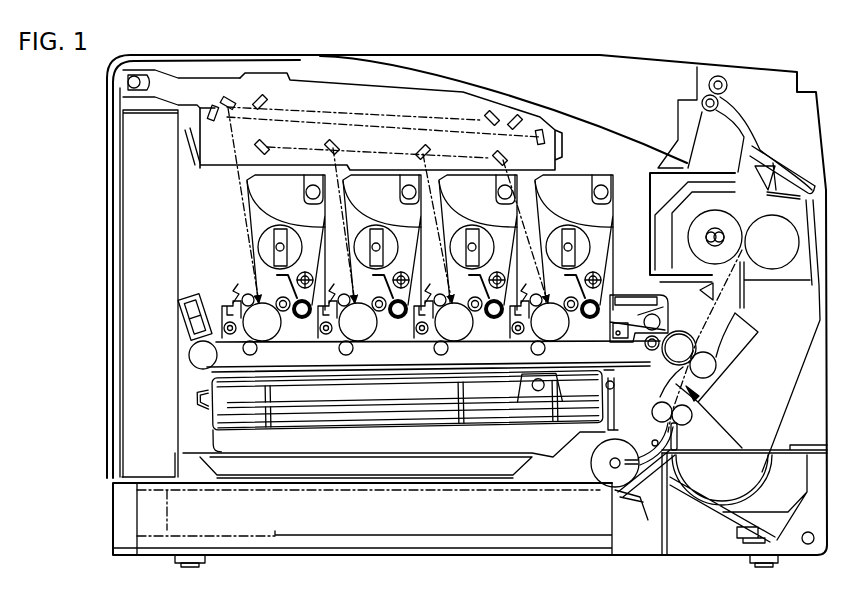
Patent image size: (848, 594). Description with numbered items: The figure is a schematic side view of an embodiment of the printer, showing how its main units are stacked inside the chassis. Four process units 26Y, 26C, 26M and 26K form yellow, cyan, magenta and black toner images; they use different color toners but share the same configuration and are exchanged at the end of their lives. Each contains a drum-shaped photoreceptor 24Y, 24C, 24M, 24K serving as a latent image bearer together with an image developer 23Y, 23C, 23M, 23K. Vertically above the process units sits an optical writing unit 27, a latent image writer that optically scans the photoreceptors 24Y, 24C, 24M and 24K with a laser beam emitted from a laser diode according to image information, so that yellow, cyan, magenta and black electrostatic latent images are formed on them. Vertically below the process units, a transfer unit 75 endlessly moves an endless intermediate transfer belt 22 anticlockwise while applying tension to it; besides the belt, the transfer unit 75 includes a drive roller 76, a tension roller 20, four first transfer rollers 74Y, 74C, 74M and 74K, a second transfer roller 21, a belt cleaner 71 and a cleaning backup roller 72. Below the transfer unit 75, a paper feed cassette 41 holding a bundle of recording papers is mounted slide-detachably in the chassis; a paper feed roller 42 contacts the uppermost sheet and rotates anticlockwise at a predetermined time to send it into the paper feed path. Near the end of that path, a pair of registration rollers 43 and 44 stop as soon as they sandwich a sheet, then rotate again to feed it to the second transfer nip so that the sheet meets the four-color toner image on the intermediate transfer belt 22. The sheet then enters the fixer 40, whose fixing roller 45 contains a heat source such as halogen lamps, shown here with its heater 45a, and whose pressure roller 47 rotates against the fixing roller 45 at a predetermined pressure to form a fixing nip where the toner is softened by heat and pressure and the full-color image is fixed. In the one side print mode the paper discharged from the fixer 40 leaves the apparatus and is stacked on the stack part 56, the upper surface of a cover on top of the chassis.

The tension roller 20 is at (680, 332).
The second transfer roller 21 is at (717, 369).
The intermediate transfer belt 22 is at (312, 343).
The image developer 23K is at (296, 201).
The image developer 23M is at (390, 201).
The image developer 23C is at (490, 201).
The image developer 23Y is at (585, 201).
The photoreceptor 24K is at (274, 329).
The photoreceptor 24M is at (371, 329).
The photoreceptor 24C is at (466, 329).
The photoreceptor 24Y is at (562, 329).
The process unit 26K is at (240, 253).
The process unit 26M is at (335, 253).
The process unit 26C is at (433, 255).
The process unit 26Y is at (532, 255).
The optical writing unit 27 is at (320, 78).
The fixer 40 is at (649, 197).
The paper feed cassette 41 is at (618, 543).
The paper feed roller 42 is at (591, 464).
The registration roller 43 is at (652, 415).
The registration roller 44 is at (690, 421).
The fixing roller 45 is at (710, 213).
The heater 45a is at (718, 228).
The pressure roller 47 is at (788, 258).
The stack part 56 is at (604, 116).
The belt cleaner 71 is at (631, 293).
The cleaning backup roller 72 is at (648, 351).
The first transfer roller 74K is at (257, 351).
The first transfer roller 74M is at (353, 351).
The first transfer roller 74C is at (448, 351).
The first transfer roller 74Y is at (545, 351).
The transfer unit 75 is at (188, 377).
The drive roller 76 is at (218, 360).